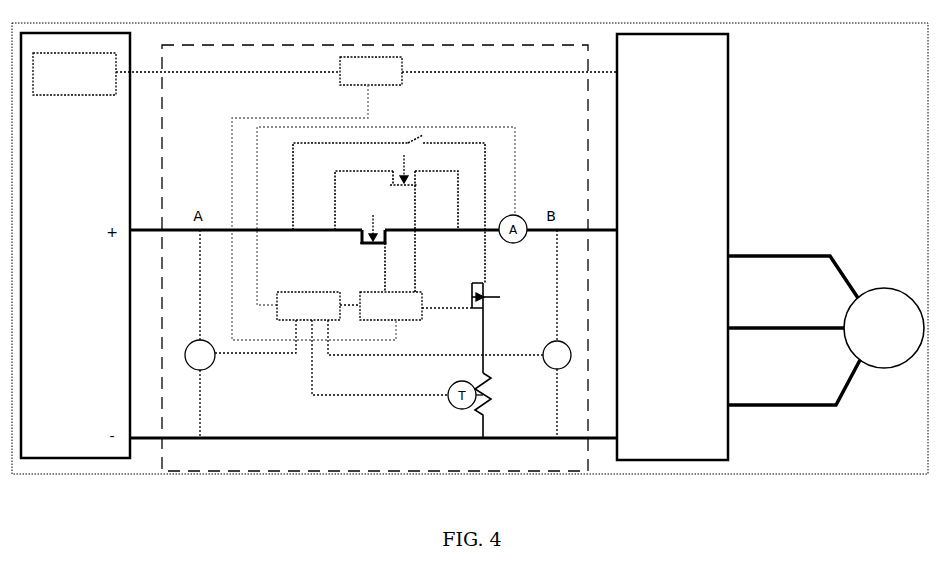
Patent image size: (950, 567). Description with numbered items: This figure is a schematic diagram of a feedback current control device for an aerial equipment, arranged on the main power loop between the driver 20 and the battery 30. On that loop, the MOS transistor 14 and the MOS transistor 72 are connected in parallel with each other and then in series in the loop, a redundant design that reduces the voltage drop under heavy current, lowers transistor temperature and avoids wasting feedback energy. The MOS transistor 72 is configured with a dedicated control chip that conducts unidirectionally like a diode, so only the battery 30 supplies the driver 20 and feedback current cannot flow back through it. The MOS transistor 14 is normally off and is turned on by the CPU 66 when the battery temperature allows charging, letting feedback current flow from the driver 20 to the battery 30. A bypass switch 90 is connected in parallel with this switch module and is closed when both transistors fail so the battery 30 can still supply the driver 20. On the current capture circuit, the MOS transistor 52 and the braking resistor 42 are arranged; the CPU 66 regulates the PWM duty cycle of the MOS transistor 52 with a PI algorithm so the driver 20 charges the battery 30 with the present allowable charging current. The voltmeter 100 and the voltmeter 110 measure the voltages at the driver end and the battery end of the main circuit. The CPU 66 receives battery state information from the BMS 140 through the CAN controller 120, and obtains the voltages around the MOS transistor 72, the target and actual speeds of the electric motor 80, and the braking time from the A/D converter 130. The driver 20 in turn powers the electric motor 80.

The driver 20 is at (672, 247).
The battery 30 is at (75, 245).
The electric motor 80 is at (826, 330).
The BMS 140 is at (186, 74).
The CAN controller 120 is at (424, 198).
The bypass switch 90 is at (389, 209).
The MOS transistor 14 is at (375, 218).
The MOS transistor 72 is at (363, 267).
The A/D converter 130 is at (379, 343).
The CPU 66 is at (416, 306).
The MOS transistor 52 is at (493, 328).
The braking resistor 42 is at (495, 405).
The voltmeter 110 is at (218, 334).
The voltmeter 100 is at (547, 334).